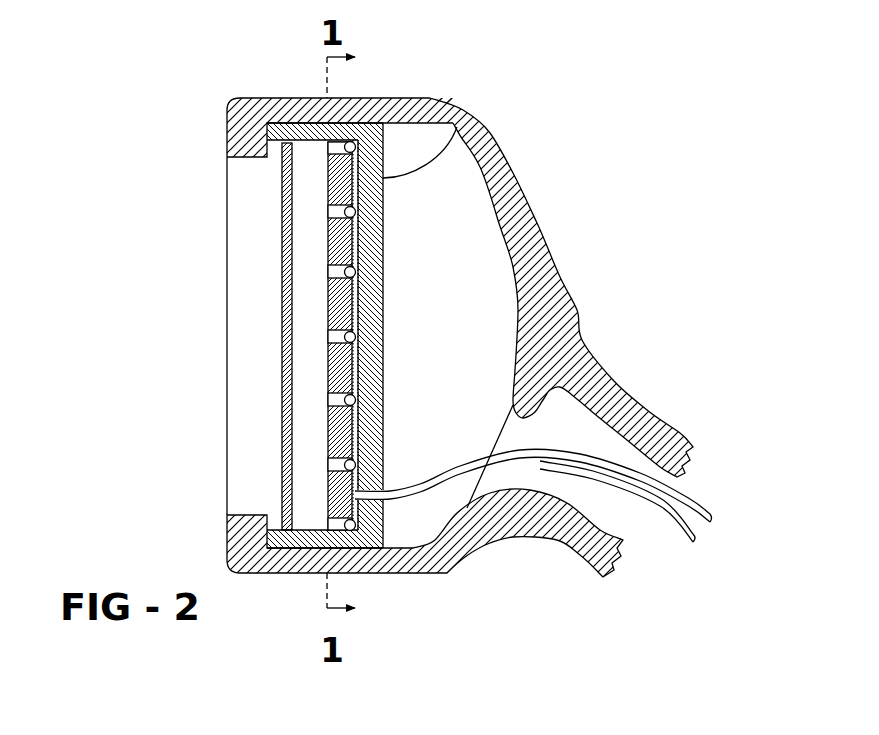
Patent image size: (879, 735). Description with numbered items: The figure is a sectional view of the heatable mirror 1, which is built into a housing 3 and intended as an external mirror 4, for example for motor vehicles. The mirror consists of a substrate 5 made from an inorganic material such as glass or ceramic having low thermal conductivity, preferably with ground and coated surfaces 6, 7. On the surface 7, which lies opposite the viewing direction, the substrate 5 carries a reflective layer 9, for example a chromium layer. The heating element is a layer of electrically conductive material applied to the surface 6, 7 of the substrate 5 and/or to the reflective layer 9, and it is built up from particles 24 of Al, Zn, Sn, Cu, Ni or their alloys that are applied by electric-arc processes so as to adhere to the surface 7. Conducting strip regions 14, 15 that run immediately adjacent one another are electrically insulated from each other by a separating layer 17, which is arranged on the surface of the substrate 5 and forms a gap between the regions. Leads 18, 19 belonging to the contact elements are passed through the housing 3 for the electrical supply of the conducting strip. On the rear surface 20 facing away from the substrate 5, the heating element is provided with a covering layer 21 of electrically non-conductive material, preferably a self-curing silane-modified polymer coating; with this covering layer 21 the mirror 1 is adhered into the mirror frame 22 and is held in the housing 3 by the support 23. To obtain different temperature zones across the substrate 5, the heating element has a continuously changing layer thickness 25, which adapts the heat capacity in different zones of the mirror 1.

The heatable mirror 1 is at (242, 493).
The housing 3 is at (230, 115).
The external mirror 4 is at (449, 117).
The substrate 5 is at (310, 417).
The surface 6 is at (282, 262).
The surface 7 is at (342, 176).
The reflective layer 9 is at (282, 433).
The conducting strip region 14 is at (350, 372).
The conducting strip region 15 is at (380, 310).
The separating layer 17 is at (347, 462).
The lead 18 is at (673, 532).
The lead 19 is at (693, 502).
The rear surface 20 is at (383, 425).
The covering layer 21 is at (367, 265).
The mirror frame 22 is at (357, 266).
The support 23 is at (387, 128).
The particles 24 is at (360, 548).
The layer thickness 25 is at (482, 133).